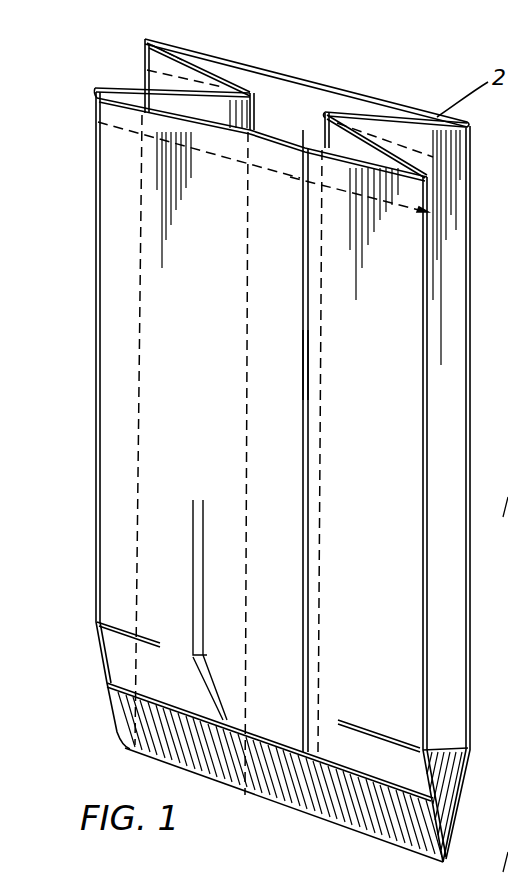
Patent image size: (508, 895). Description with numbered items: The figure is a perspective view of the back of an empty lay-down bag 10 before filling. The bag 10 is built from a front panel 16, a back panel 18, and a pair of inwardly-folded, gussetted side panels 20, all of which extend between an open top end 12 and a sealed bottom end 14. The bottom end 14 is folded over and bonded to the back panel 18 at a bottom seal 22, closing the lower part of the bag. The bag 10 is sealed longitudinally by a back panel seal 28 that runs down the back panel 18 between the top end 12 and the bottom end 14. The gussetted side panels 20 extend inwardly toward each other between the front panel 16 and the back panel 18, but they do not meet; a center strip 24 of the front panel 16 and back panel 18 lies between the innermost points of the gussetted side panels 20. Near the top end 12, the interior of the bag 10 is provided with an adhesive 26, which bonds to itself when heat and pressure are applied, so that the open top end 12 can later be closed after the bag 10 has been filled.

The lay-down bag 10 is at (92, 310).
The open top end 12 is at (365, 88).
The sealed bottom end 14 is at (100, 685).
The front panel 16 is at (408, 106).
The back panel 18 is at (207, 250).
The gussetted side panels 20 is at (215, 72).
The bottom seal 22 is at (437, 833).
The center strip 24 is at (306, 125).
The adhesive 26 is at (284, 93).
The back panel seal 28 is at (304, 341).